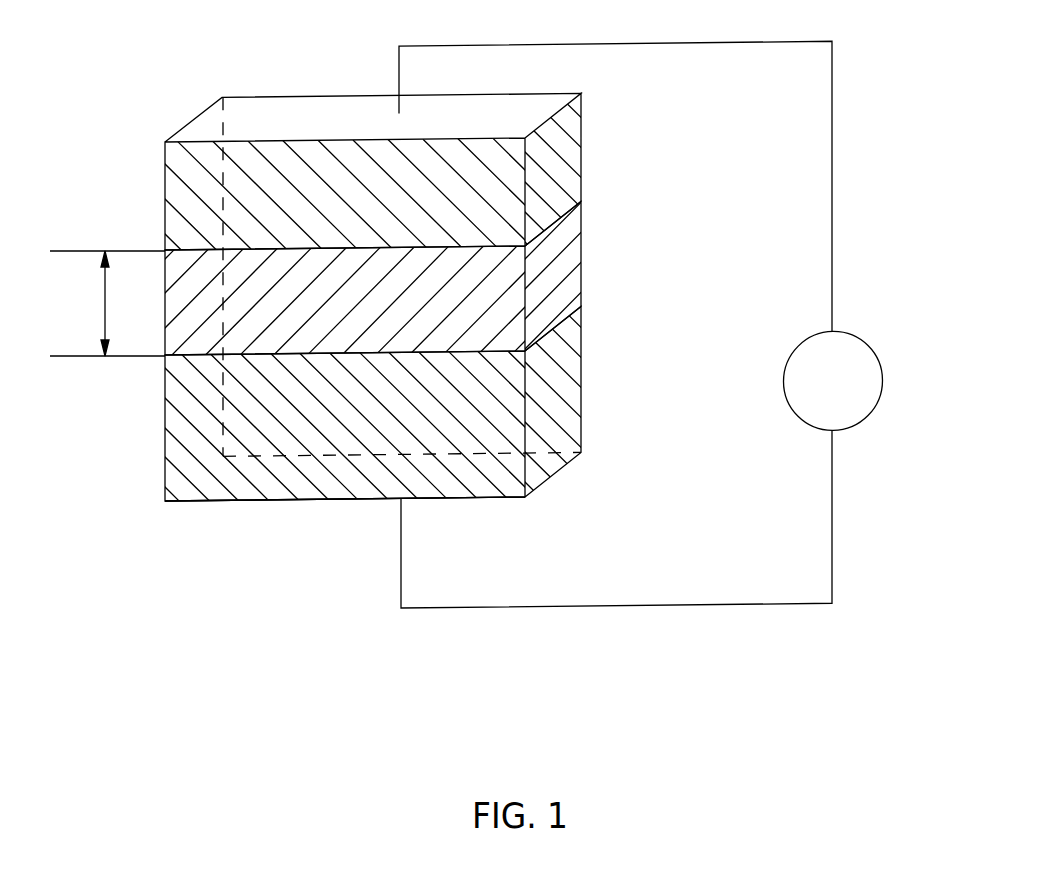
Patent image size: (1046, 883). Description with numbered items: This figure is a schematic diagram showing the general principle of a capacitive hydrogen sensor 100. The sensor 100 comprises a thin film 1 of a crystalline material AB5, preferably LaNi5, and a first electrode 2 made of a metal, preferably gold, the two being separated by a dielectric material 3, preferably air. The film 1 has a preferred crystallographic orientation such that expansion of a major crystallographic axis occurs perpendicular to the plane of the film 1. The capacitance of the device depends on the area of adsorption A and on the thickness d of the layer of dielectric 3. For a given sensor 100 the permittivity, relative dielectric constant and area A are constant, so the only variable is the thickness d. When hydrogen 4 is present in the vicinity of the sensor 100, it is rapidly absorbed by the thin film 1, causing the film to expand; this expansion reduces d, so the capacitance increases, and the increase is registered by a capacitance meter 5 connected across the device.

The thin film 1 is at (197, 488).
The first electrode 2 is at (222, 183).
The dielectric material 3 is at (172, 352).
The hydrogen 4 is at (277, 567).
The capacitance meter 5 is at (853, 425).
The sensor 100 is at (297, 724).
The area of adsorption A is at (307, 492).
The thickness of the dielectric layer d is at (107, 303).